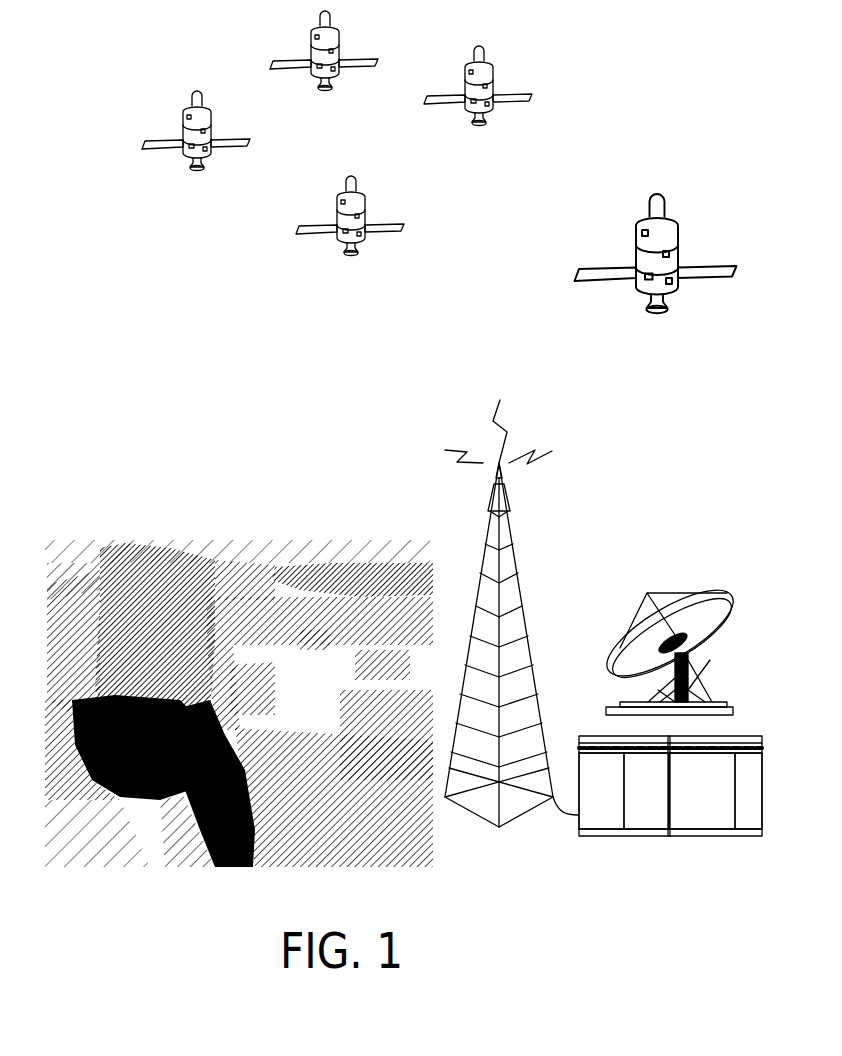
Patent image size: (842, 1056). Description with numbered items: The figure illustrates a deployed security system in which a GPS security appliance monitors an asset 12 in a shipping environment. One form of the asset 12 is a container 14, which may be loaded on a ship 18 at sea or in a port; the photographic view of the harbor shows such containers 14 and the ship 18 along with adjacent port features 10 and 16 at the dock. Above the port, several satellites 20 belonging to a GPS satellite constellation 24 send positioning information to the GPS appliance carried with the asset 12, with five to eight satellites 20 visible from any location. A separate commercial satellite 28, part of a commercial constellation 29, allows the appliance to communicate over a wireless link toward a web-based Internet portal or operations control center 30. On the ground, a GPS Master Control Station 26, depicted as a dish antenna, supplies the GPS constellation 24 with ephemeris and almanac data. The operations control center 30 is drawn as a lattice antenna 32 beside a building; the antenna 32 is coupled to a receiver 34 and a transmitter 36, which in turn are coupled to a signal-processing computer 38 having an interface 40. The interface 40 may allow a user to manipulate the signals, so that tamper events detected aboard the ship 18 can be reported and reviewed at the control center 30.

The port facility 10 is at (70, 705).
The asset 12 is at (75, 725).
The container 14 is at (80, 748).
The container 16 is at (265, 735).
The ship 18 is at (110, 808).
The satellite 20 is at (339, 30).
The GPS satellite constellation 24 is at (460, 176).
The GPS Master Control Station 26 is at (733, 558).
The commercial satellite 28 is at (632, 244).
The commercial constellation 29 is at (683, 191).
The operations control center 30 is at (603, 858).
The antenna 32 is at (519, 555).
The receiver 34 is at (685, 819).
The transmitter 36 is at (730, 825).
The signal-processing computer 38 is at (617, 821).
The interface 40 is at (647, 821).